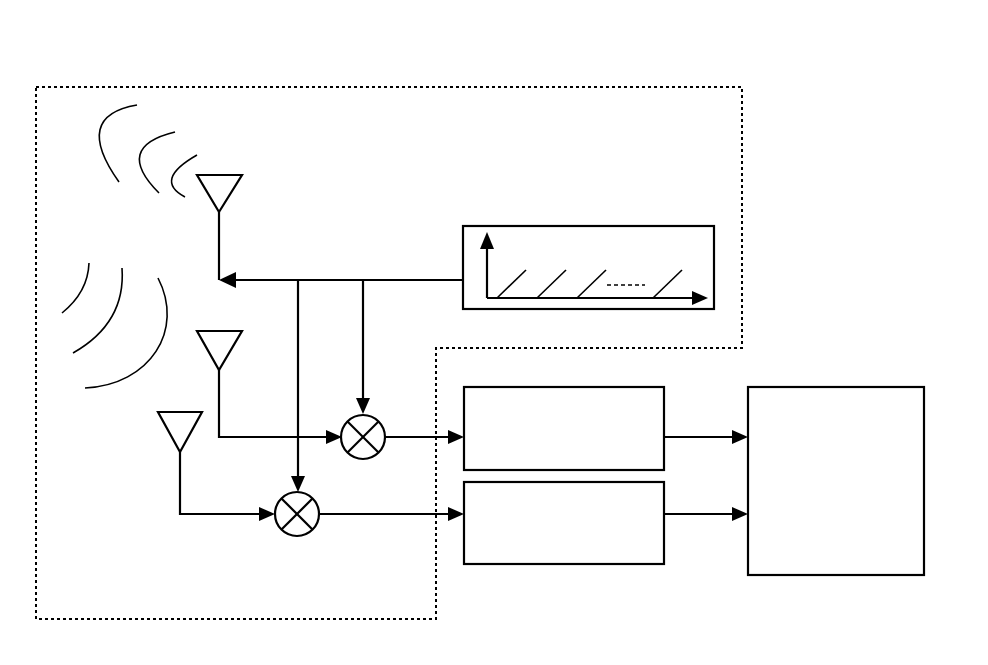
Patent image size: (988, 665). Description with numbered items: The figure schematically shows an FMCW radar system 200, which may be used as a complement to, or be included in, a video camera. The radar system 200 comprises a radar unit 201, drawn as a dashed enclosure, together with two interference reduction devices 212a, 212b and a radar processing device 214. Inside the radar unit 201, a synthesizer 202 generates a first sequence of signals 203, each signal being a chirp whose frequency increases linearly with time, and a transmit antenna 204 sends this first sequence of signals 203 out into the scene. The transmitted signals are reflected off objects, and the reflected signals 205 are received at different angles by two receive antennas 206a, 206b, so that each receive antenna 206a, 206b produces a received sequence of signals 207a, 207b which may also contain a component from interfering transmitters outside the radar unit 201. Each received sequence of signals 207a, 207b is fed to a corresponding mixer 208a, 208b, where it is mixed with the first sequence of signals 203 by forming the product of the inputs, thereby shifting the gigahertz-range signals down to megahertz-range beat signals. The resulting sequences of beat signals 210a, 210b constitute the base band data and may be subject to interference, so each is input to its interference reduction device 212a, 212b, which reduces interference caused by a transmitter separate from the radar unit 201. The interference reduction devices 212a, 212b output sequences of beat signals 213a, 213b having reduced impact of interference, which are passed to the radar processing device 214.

The FMCW radar system 200 is at (805, 160).
The radar unit 201 is at (257, 87).
The synthesizer 202 is at (553, 226).
The first sequence of signals 203 is at (378, 280).
The transmit antenna 204 is at (222, 247).
The reflected signals 205 is at (72, 398).
The receive antenna 206a is at (228, 390).
The receive antenna 206b is at (178, 473).
The received sequence of signals 207a is at (236, 437).
The received sequence of signals 207b is at (202, 516).
The mixer 208a is at (382, 418).
The mixer 208b is at (311, 536).
The sequence of beat signals 210a is at (398, 438).
The sequence of beat signals 210b is at (352, 516).
The interference reduction device 212a is at (552, 387).
The interference reduction device 212b is at (560, 567).
The sequence of beat signals having reduced impact of interference 213a is at (678, 437).
The sequence of beat signals having reduced impact of interference 213b is at (678, 514).
The radar processing device 214 is at (813, 387).